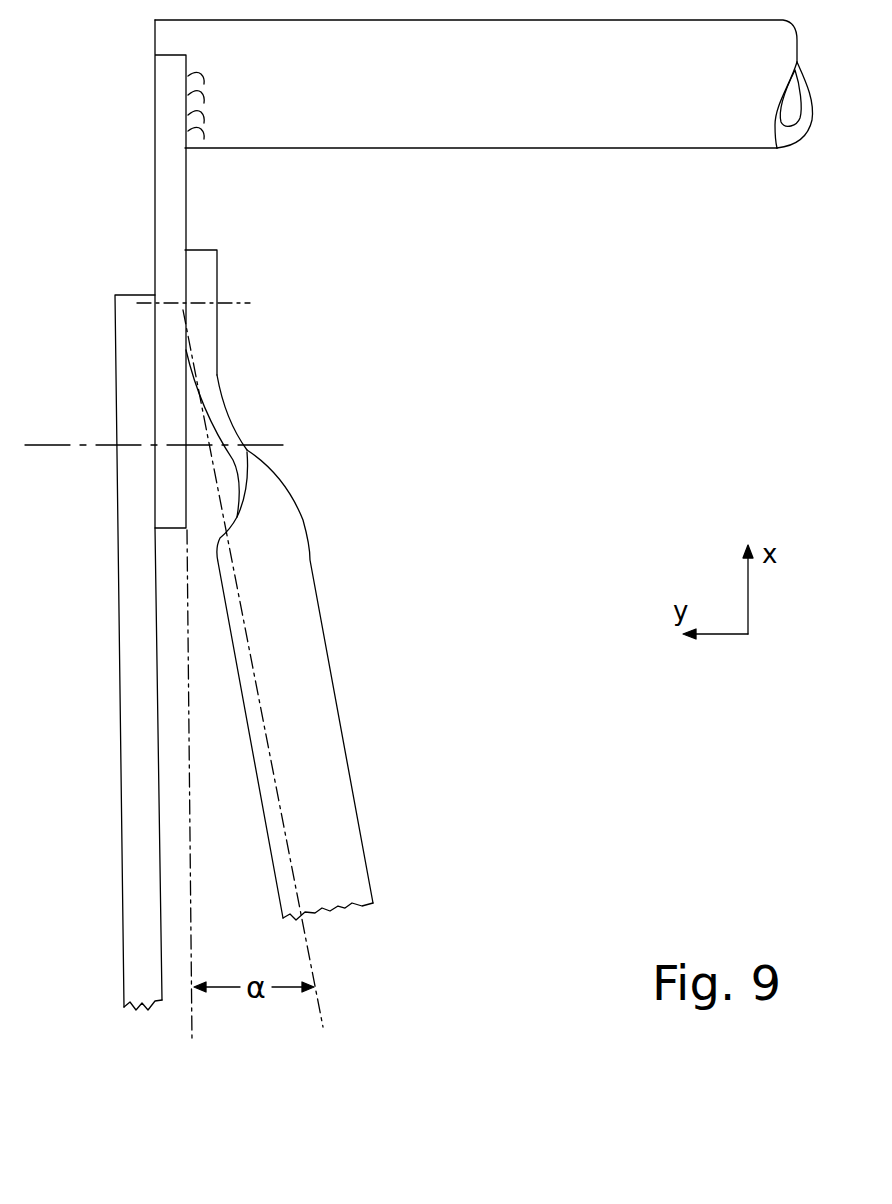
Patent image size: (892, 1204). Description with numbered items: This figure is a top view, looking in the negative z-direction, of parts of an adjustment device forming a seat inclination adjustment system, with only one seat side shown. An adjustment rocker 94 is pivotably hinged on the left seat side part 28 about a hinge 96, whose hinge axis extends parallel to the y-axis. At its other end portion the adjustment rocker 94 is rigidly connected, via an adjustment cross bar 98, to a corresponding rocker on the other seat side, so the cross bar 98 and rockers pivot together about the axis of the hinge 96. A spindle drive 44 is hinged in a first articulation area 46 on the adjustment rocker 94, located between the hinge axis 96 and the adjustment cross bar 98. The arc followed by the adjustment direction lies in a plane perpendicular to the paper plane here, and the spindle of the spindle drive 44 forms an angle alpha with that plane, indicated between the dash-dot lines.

The adjustment cross bar 98 is at (525, 72).
The adjustment rocker 94 is at (165, 173).
The first articulation area 46 is at (200, 276).
The spindle drive 44 is at (388, 690).
The left seat side part 28 is at (142, 790).
The hinge 96 is at (243, 307).